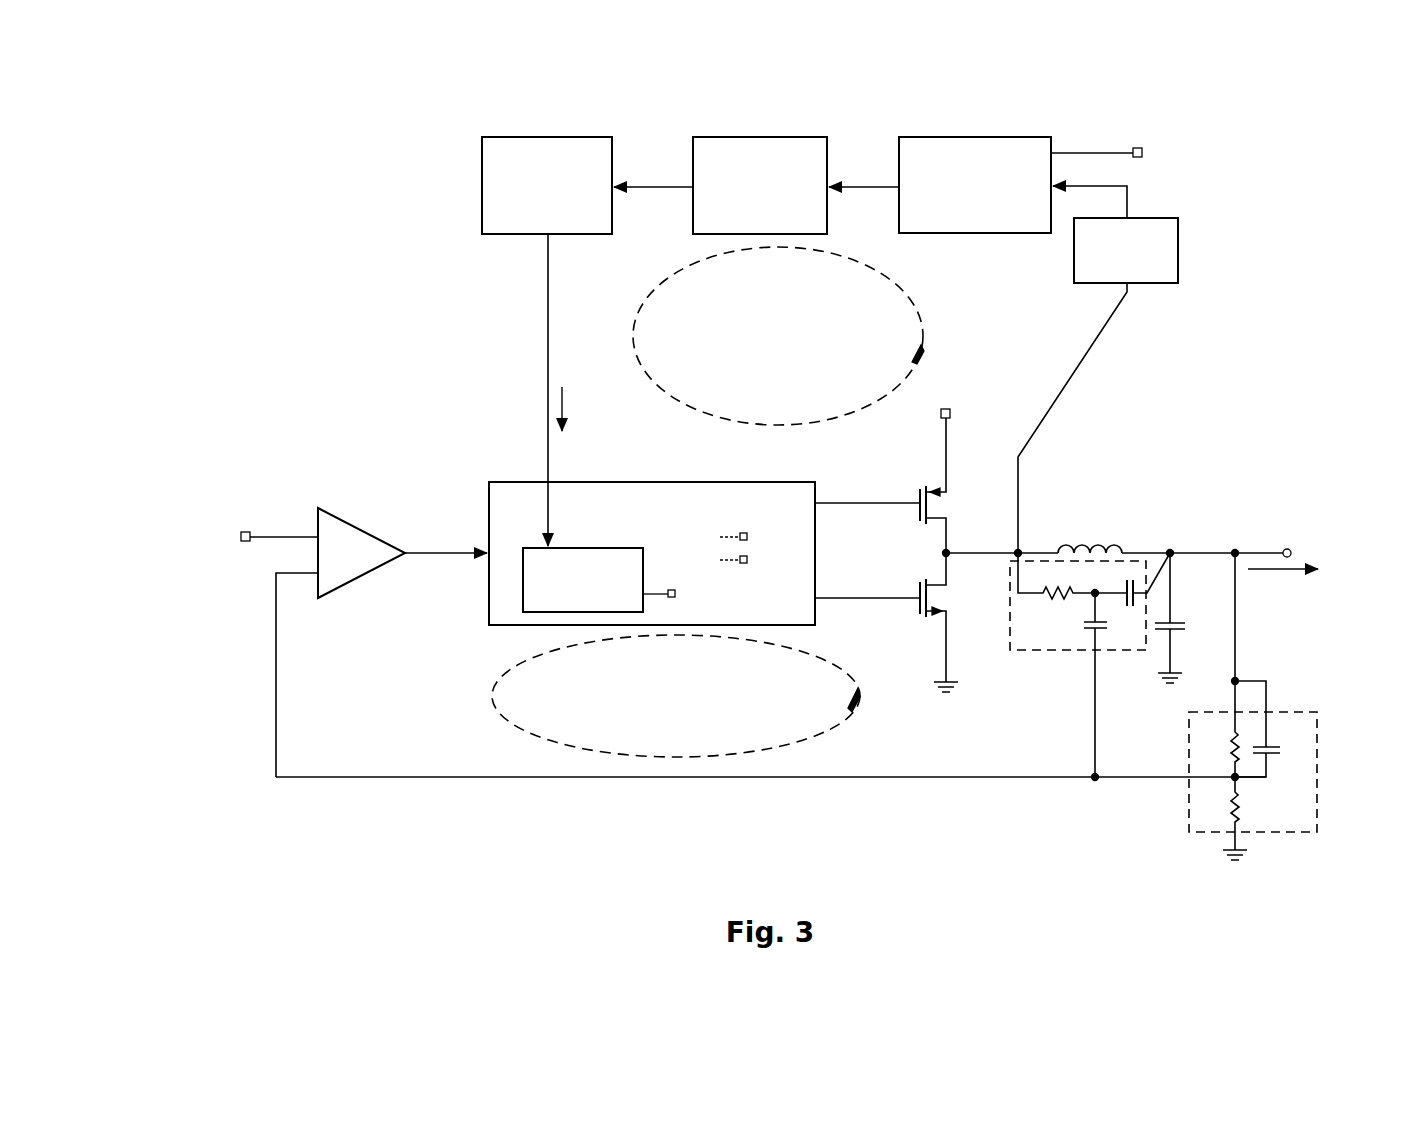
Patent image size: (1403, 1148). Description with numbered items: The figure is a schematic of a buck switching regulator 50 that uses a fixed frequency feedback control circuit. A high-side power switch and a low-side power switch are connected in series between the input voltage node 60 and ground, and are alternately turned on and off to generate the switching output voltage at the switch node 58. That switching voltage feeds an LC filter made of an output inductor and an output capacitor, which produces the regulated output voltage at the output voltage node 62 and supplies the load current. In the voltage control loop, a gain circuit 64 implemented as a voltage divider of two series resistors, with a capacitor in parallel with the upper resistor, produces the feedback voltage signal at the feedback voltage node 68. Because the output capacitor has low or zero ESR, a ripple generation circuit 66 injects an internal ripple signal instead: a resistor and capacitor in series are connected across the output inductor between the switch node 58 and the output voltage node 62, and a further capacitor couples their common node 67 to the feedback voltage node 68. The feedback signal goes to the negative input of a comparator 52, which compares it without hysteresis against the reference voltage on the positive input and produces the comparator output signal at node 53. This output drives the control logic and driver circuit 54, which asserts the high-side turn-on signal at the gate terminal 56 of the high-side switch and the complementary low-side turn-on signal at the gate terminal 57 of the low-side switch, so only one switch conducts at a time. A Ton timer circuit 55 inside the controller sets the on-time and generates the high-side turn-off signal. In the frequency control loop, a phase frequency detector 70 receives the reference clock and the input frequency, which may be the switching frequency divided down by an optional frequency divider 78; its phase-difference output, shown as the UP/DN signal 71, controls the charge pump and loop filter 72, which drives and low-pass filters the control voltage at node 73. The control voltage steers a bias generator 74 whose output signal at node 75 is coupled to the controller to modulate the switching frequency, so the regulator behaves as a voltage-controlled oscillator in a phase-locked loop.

The switching regulator 50 is at (1268, 116).
The comparator 52 is at (360, 578).
The comparator output signal node 53 is at (438, 558).
The control logic and driver circuit 54 is at (652, 553).
The Ton timer circuit 55 is at (643, 557).
The gate terminal of high-side power switch 56 is at (858, 506).
The gate terminal of low-side power switch 57 is at (861, 601).
The switch node 58 is at (975, 556).
The input voltage node 60 is at (941, 413).
The output voltage node 62 is at (1172, 547).
The gain circuit 64 is at (1284, 712).
The ripple generation circuit 66 is at (1090, 665).
The common node 67 is at (1097, 596).
The feedback voltage node 68 is at (948, 779).
The phase frequency detector 70 is at (1003, 137).
The UP/DN signal 71 is at (876, 190).
The charge pump and loop filter 72 is at (796, 137).
The control voltage node 73 is at (658, 190).
The bias generator 74 is at (570, 137).
The bias generator output signal node 75 is at (547, 282).
The frequency divider 78 is at (1180, 236).